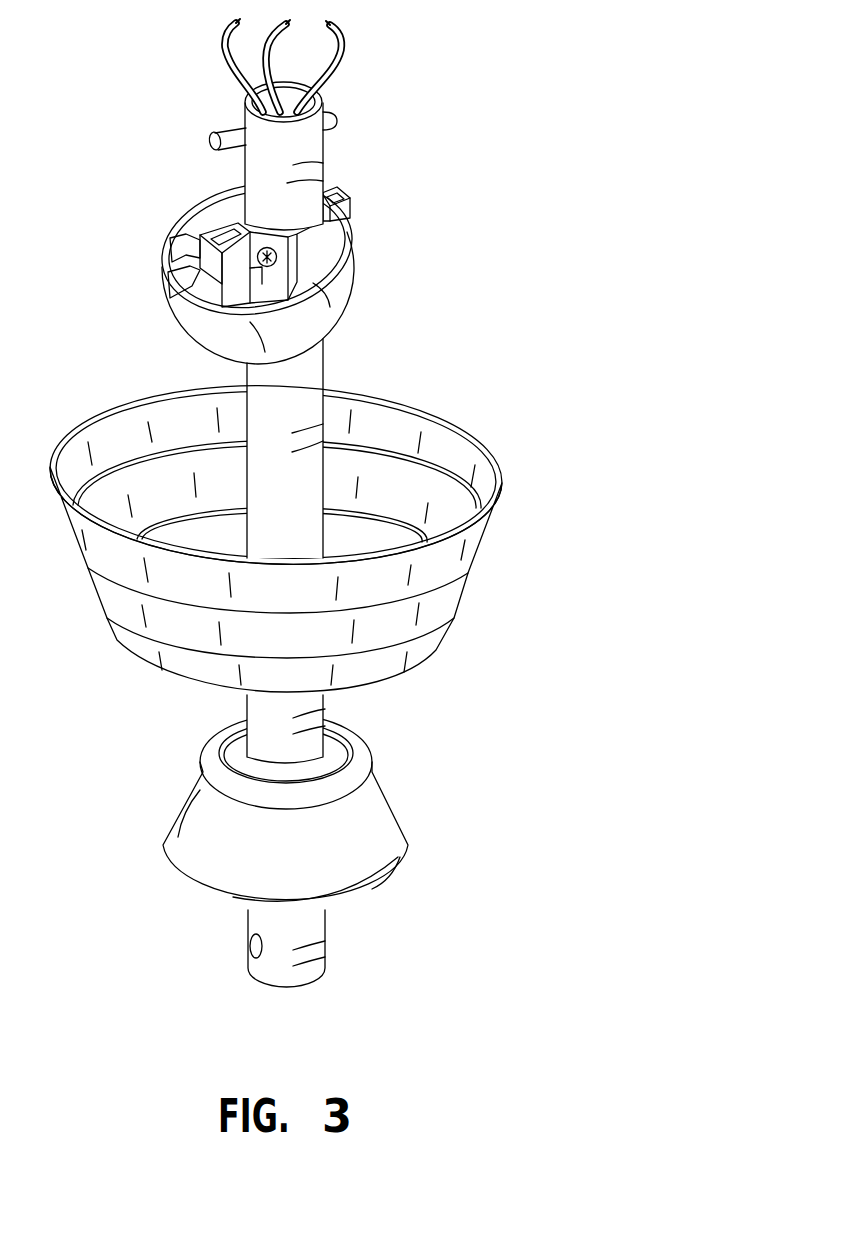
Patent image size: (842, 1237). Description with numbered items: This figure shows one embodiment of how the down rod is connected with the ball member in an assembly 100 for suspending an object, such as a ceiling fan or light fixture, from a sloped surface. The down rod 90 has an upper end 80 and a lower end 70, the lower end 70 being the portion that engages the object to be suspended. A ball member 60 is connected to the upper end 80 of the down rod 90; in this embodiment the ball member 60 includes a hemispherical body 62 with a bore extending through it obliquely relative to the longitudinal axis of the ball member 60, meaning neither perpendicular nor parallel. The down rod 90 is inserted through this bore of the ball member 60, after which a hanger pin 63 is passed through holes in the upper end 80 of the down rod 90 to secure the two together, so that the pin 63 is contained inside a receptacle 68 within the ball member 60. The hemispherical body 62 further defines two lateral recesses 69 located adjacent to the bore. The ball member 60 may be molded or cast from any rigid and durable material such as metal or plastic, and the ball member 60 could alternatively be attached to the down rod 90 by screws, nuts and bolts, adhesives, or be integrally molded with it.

The assembly 100 is at (612, 218).
The ball member 60 is at (350, 282).
The hemispherical body 62 is at (170, 262).
The hanger pin 63 is at (214, 140).
The receptacle 68 is at (353, 204).
The lateral recesses 69 is at (227, 237).
The lower end 70 is at (325, 937).
The upper end 80 is at (323, 146).
The down rod 90 is at (325, 360).